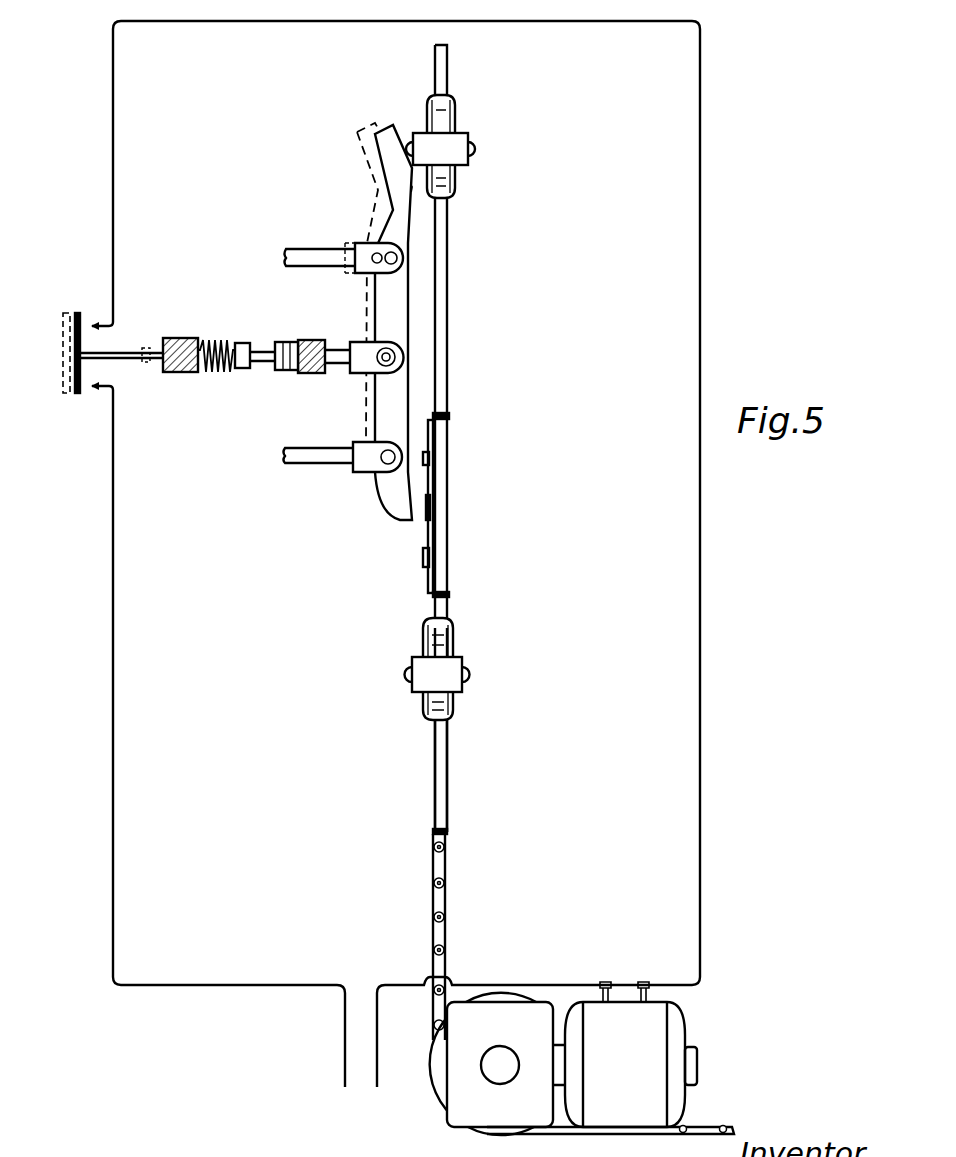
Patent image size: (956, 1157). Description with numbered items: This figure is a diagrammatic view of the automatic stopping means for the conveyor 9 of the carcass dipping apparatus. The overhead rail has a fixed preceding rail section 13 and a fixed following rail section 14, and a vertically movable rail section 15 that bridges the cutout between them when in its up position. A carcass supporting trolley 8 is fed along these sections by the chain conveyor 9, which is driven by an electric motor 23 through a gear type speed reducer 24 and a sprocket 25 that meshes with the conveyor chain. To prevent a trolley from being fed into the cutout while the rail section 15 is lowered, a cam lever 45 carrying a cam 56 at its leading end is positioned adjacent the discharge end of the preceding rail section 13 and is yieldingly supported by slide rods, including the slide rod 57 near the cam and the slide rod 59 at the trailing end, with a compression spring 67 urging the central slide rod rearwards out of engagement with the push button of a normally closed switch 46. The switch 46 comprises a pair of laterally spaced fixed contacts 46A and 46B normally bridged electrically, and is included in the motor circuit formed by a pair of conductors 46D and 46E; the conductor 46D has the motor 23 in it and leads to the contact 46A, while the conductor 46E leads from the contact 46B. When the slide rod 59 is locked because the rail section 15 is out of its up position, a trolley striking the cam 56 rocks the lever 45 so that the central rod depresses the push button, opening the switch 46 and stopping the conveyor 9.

The carcass supporting trolley 8 is at (460, 130).
The conveyor 9 is at (445, 905).
The preceding rail section 13 is at (447, 306).
The following rail section 14 is at (440, 758).
The vertically movable rail section 15 is at (437, 508).
The electric motor 23 is at (610, 1058).
The gear type speed reducer 24 is at (506, 1064).
The sprocket 25 is at (437, 1086).
The cam lever 45 is at (366, 310).
The push button type switch 46 is at (70, 367).
The fixed contact 46A is at (88, 324).
The fixed contact 46B is at (86, 390).
The conductor 46D is at (388, 1065).
The conductor 46E is at (265, 986).
The cam 56 is at (268, 352).
The slide rod 57 is at (305, 256).
The slide rod 59 is at (330, 465).
The compression spring 67 is at (212, 346).